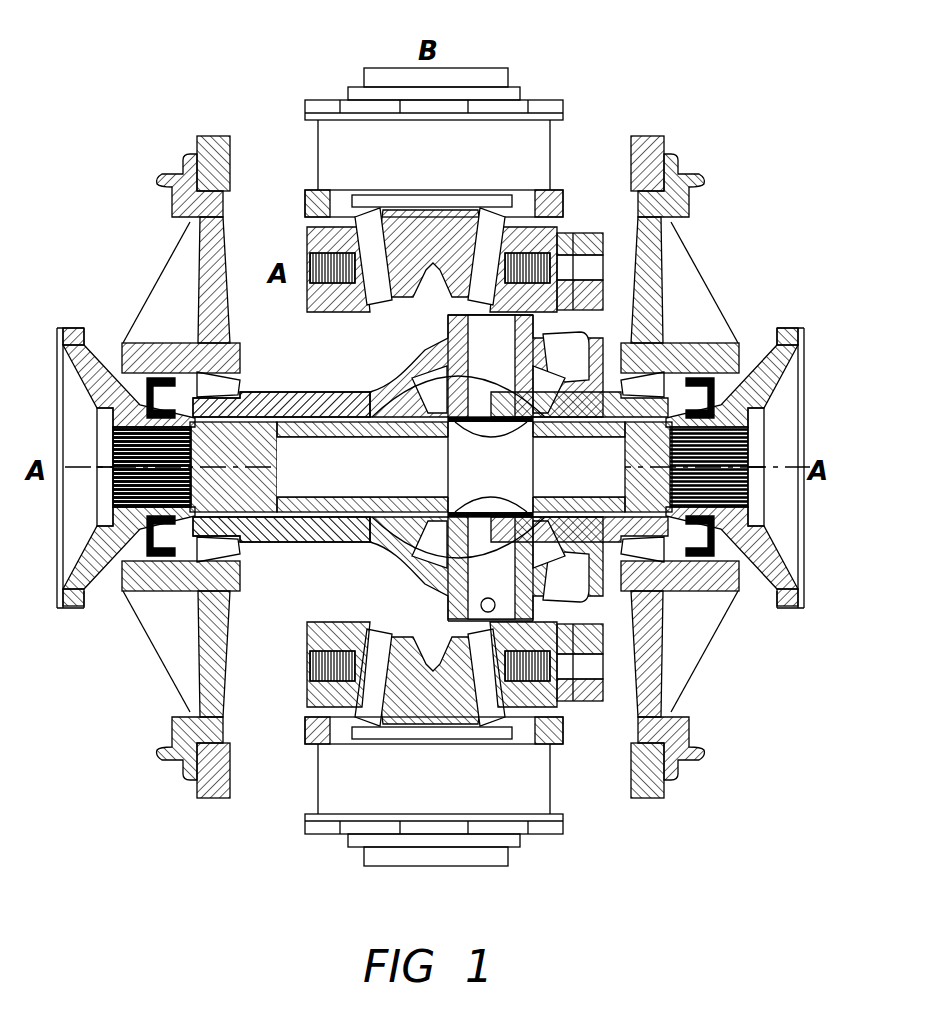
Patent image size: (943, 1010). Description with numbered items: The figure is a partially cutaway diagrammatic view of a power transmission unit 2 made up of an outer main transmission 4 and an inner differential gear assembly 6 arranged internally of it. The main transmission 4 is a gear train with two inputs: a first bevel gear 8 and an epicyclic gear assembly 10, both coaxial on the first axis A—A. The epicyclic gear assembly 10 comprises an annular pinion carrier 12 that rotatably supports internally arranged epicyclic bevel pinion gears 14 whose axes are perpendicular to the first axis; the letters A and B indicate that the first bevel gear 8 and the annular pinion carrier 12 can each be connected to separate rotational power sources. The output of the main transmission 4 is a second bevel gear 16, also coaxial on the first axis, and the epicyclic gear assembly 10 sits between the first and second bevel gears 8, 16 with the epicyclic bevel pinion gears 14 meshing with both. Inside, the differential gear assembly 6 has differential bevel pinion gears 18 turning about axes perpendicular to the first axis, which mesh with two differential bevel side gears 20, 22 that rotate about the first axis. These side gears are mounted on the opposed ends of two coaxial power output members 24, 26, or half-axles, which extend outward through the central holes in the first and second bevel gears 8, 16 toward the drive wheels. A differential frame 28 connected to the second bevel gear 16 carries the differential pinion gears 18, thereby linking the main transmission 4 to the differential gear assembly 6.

The power transmission unit 2 is at (128, 660).
The main transmission 4 is at (295, 150).
The differential gear assembly 6 is at (318, 552).
The first bevel gear 8 is at (330, 300).
The epicyclic gear assembly 10 is at (565, 140).
The annular pinion carrier 12 is at (503, 140).
The epicyclic bevel pinion gears 14 is at (396, 296).
The second bevel gear 16 is at (540, 236).
The differential bevel pinion gears 18 is at (523, 405).
The differential bevel side gear 20 is at (433, 420).
The differential bevel side gear 22 is at (553, 420).
The power output member 24 is at (203, 502).
The power output member 26 is at (655, 455).
The differential frame 28 is at (560, 326).